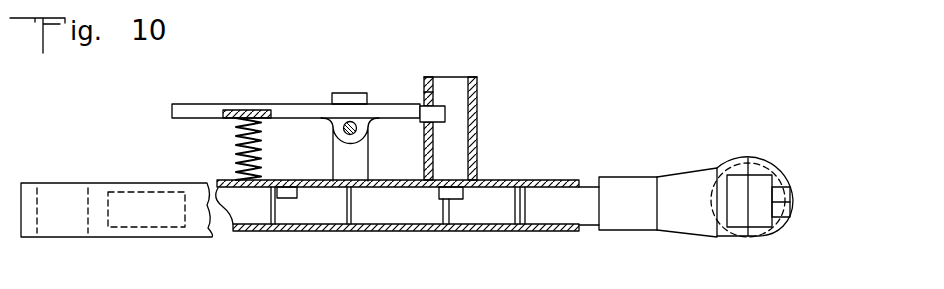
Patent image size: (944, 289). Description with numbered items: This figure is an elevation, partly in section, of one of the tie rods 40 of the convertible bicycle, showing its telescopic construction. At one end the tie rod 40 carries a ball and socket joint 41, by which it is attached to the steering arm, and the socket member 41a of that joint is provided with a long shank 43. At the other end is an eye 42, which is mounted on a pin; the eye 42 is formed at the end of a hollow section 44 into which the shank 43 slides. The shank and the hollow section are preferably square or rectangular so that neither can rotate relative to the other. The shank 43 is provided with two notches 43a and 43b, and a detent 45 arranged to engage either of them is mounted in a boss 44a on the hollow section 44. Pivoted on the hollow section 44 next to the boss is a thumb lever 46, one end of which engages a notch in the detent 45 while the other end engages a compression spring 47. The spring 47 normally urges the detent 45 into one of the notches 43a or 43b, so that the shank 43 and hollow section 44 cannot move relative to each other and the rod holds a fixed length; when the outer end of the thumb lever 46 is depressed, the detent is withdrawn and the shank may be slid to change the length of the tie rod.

The tie rod 40 is at (398, 236).
The ball and socket joint 41 is at (744, 206).
The socket member 41a is at (735, 164).
The eye 42 is at (47, 183).
The shank 43 is at (582, 200).
The notch 43a is at (460, 194).
The notch 43b is at (295, 200).
The hollow section 44 is at (483, 233).
The boss 44a is at (478, 138).
The detent 45 is at (477, 128).
The thumb lever 46 is at (300, 88).
The compression spring 47 is at (237, 135).